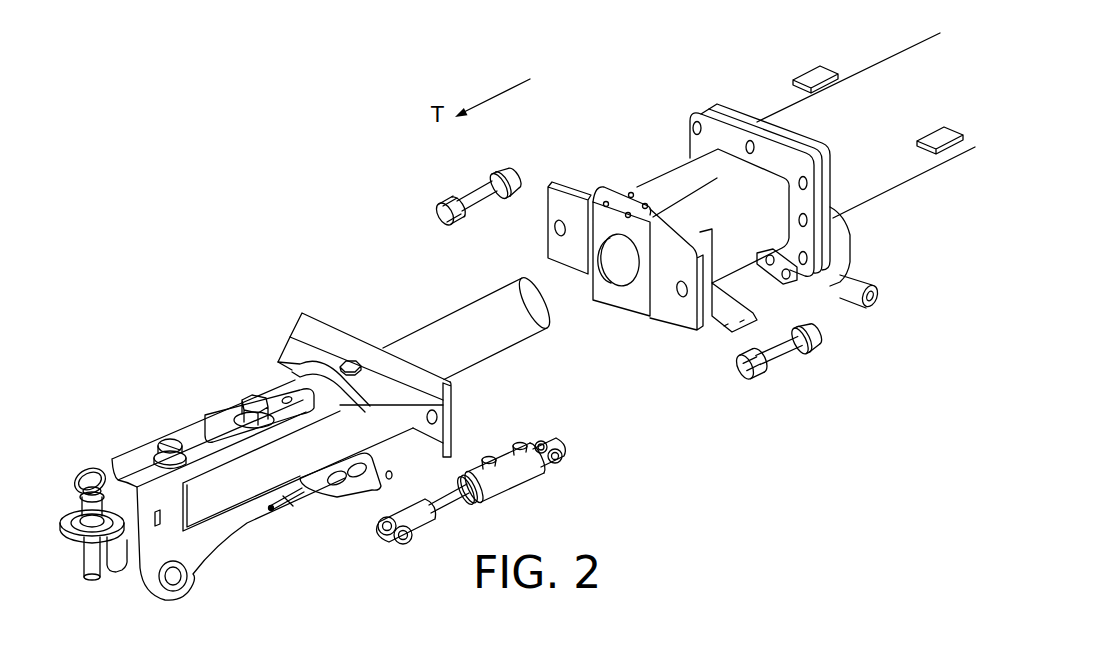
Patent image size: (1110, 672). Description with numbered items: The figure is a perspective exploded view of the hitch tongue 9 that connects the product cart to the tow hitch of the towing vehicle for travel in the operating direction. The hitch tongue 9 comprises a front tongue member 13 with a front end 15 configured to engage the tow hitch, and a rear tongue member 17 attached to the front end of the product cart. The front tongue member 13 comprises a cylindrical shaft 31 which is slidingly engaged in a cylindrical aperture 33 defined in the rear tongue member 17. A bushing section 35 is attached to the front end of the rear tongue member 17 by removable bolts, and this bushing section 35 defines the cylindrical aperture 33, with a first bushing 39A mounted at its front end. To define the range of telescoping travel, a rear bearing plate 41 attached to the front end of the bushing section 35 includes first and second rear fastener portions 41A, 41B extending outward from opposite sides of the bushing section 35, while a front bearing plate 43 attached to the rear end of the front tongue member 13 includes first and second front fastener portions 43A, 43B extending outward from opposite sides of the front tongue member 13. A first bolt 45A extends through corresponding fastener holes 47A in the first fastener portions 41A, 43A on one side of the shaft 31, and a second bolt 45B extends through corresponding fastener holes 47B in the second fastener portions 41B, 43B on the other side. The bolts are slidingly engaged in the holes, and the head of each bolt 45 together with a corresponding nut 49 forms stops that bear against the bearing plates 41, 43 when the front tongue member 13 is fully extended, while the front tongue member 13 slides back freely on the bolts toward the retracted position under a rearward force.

The hitch tongue 9 is at (603, 98).
The front tongue member 13 is at (232, 398).
The front end 15 is at (61, 512).
The rear tongue member 17 is at (877, 63).
The cylindrical shaft 31 is at (477, 300).
The cylindrical aperture 33 is at (614, 280).
The bushing section 35 is at (681, 167).
The first bushing 39A is at (606, 262).
The rear bearing plate 41 is at (634, 190).
The first rear fastener portion 41A is at (563, 183).
The second rear fastener portion 41B is at (703, 332).
The front bearing plate 43 is at (355, 332).
The first front fastener portion 43A is at (303, 312).
The second front fastener portion 43B is at (457, 413).
The bolt 45 is at (820, 382).
The first fastener bolt 45A is at (483, 183).
The second fastener bolt 45B is at (793, 360).
The fastener holes 47A is at (554, 236).
The fastener holes 47B is at (681, 298).
The nut 49 is at (757, 385).